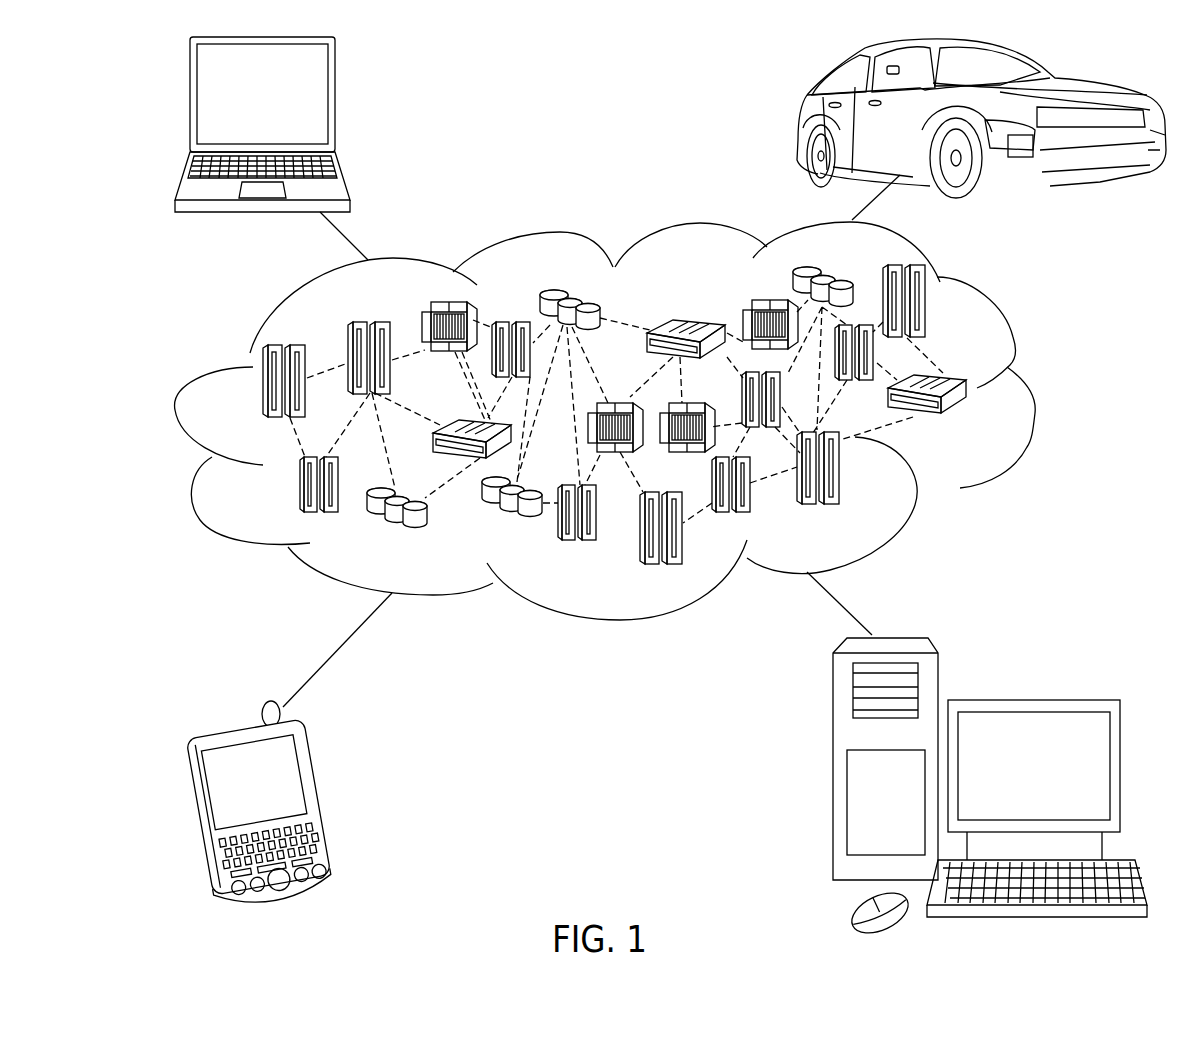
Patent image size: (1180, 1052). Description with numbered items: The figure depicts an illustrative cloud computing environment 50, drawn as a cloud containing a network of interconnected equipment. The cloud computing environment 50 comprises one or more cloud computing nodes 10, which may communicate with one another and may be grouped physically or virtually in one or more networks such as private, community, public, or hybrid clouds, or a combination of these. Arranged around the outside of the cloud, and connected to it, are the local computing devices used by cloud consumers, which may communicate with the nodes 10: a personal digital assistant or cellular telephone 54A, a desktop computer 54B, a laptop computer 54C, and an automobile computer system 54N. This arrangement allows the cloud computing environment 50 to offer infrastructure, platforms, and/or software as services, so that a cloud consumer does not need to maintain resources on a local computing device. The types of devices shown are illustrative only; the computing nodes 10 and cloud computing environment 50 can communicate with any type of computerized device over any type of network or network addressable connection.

The cloud computing node 10 is at (675, 414).
The cloud computing environment 50 is at (1033, 392).
The personal digital assistant (PDA) or cellular telephone 54A is at (325, 798).
The desktop computer 54B is at (1032, 700).
The laptop computer 54C is at (335, 102).
The automobile computer system 54N is at (800, 118).